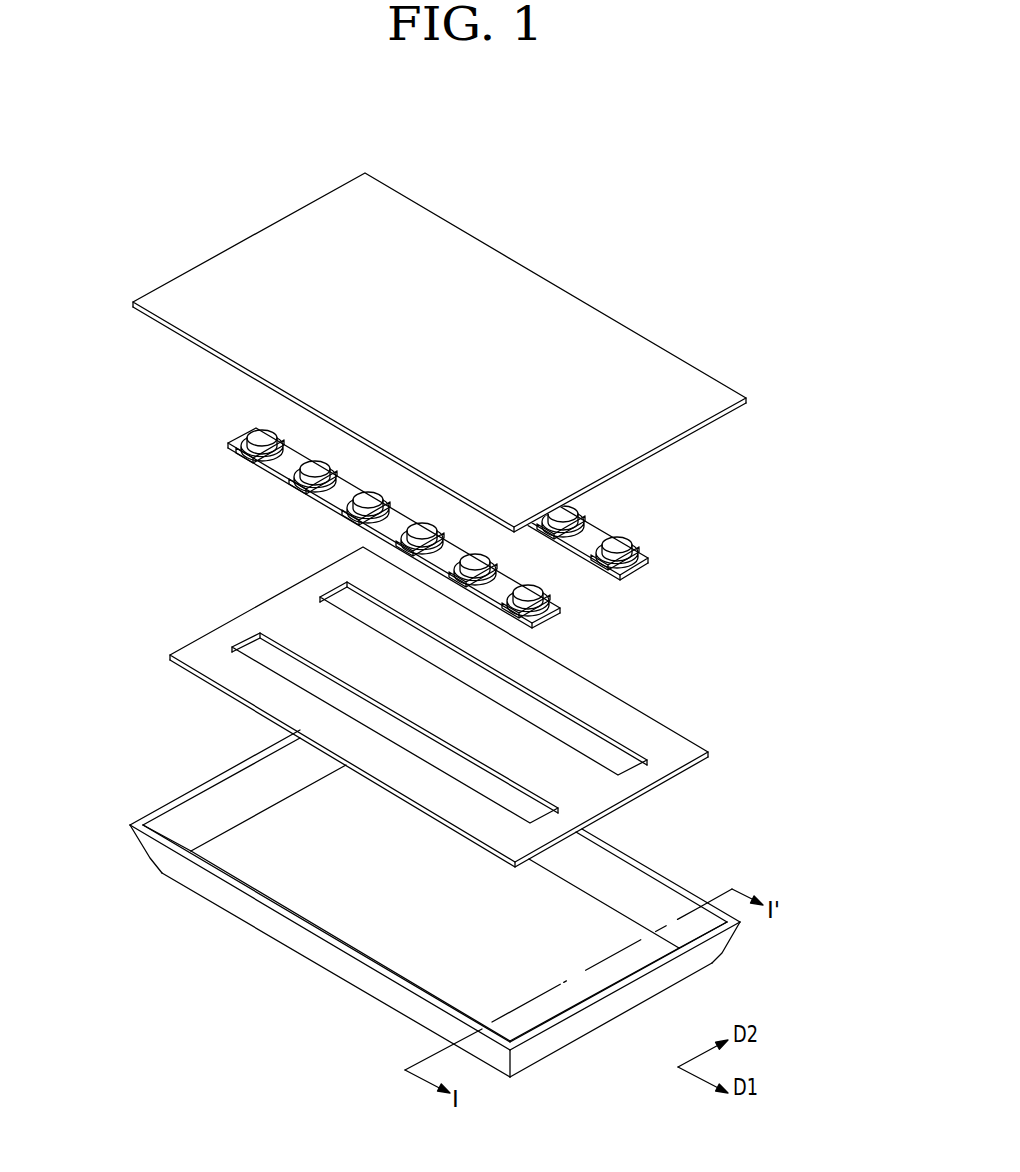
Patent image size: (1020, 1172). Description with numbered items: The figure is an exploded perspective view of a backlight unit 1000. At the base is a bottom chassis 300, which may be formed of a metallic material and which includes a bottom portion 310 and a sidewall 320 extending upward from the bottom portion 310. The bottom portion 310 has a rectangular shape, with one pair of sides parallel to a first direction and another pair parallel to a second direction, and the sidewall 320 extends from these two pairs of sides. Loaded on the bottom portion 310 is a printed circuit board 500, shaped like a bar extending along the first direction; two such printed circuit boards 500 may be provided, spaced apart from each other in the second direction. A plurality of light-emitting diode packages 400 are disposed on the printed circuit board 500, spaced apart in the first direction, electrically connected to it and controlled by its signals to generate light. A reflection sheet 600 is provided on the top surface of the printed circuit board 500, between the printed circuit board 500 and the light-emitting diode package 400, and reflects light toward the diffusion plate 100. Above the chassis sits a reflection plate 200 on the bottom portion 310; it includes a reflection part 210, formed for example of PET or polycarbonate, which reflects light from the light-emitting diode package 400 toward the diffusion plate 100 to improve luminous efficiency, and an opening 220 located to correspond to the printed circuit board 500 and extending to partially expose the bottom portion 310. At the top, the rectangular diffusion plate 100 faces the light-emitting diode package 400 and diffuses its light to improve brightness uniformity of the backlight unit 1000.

The backlight unit 1000 is at (766, 214).
The diffusion plate 100 is at (261, 246).
The reflection plate 200 is at (422, 680).
The reflection part 210 is at (207, 657).
The opening 220 is at (257, 650).
The bottom chassis 300 is at (421, 881).
The bottom portion 310 is at (225, 847).
The sidewall 320 is at (160, 815).
The light-emitting diode package 400 is at (616, 546).
The printed circuit board 500 is at (643, 566).
The reflection sheet 600 is at (643, 550).